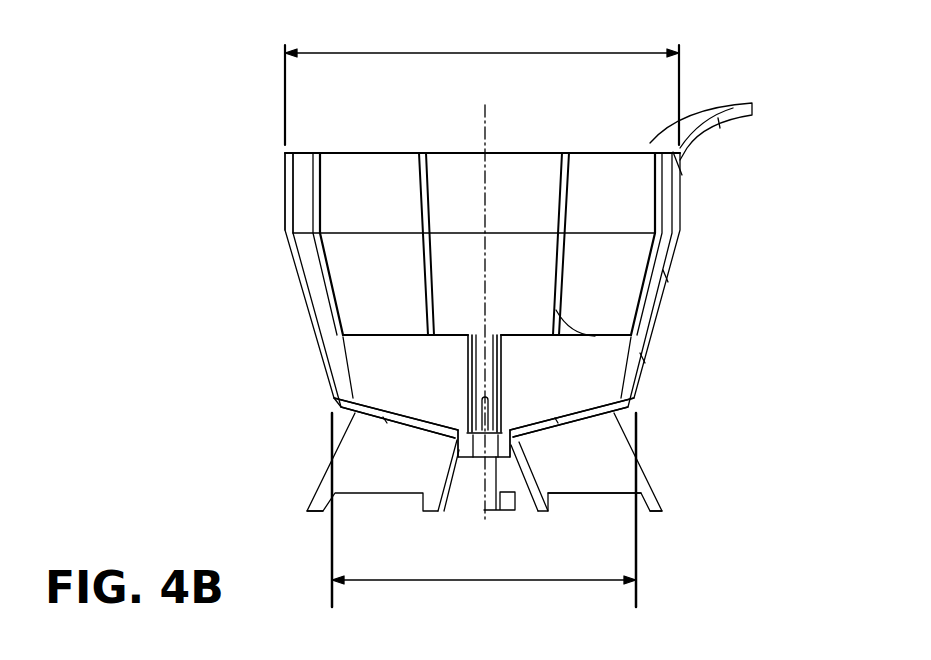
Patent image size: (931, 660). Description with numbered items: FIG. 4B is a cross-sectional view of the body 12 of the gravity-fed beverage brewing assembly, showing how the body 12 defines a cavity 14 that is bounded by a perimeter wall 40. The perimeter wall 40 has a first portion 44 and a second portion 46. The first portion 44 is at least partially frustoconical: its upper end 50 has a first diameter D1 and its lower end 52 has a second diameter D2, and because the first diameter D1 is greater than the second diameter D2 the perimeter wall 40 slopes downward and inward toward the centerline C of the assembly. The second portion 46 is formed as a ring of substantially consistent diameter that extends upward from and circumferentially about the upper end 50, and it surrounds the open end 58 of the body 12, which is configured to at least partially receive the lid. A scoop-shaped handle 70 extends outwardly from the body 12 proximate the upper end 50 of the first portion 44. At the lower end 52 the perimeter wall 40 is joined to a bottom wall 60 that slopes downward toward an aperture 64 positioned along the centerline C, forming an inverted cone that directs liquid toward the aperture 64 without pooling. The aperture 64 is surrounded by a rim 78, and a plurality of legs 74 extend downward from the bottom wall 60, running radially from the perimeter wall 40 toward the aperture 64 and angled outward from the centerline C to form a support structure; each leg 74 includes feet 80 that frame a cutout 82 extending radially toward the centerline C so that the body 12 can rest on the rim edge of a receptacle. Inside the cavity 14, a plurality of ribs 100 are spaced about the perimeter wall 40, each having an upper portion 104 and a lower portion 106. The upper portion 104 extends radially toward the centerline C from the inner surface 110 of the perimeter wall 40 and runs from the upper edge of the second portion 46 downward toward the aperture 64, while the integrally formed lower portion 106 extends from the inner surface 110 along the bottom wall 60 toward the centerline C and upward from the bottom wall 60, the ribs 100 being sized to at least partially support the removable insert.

The body 12 is at (752, 157).
The cavity 14 is at (624, 218).
The perimeter wall 40 is at (657, 297).
The first portion 44 is at (318, 327).
The second portion 46 is at (285, 187).
The upper end 50 is at (285, 232).
The lower end 52 is at (333, 407).
The open end 58 is at (601, 146).
The bottom wall 60 is at (382, 420).
The aperture 64 is at (474, 460).
The handle 70 is at (708, 116).
The plurality of legs 74 is at (608, 450).
The rim 78 is at (466, 455).
The feet 80 is at (665, 500).
The cutout 82 is at (593, 498).
The plurality of ribs 100 is at (572, 363).
The upper portion 104 is at (560, 196).
The lower portion 106 is at (575, 380).
The inner surface 110 is at (440, 197).
The centerline C is at (487, 118).
The first diameter D1 is at (458, 52).
The second diameter D2 is at (467, 582).